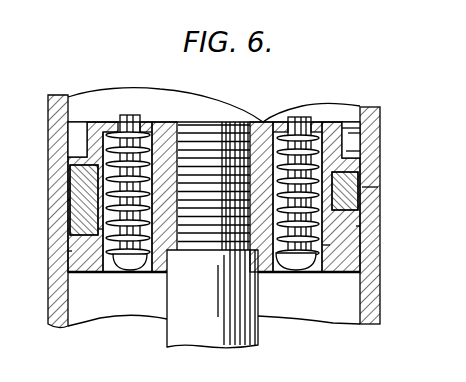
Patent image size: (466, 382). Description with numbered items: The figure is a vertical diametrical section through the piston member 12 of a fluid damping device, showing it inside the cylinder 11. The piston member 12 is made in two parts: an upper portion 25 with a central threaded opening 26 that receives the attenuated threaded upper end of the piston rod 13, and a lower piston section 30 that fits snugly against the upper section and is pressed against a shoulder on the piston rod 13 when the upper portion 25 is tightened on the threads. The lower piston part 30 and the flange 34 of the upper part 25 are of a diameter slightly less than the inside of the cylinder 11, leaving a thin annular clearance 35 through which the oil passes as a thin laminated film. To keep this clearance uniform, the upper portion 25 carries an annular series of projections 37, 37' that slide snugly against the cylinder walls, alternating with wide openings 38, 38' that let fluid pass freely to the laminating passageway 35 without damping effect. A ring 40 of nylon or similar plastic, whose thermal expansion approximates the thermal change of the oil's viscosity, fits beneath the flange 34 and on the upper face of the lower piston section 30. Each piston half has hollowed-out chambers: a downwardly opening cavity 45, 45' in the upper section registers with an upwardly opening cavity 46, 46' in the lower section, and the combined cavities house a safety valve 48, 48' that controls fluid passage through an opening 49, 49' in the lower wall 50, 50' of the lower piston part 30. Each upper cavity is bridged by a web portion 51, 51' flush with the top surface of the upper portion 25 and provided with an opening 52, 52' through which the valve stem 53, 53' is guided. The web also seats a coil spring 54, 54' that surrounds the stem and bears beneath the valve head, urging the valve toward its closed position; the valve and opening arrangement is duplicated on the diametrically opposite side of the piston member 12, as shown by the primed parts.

The cylinder 11 is at (52, 326).
The piston member 12 is at (265, 121).
The piston rod 13 is at (209, 334).
The upper piston portion 25 is at (299, 96).
The central threaded opening 26 is at (170, 122).
The lower piston section 30 is at (53, 276).
The flange 34 is at (57, 198).
The annular clearance space 35 is at (356, 226).
The projection 37 is at (95, 163).
The projection 37' is at (372, 100).
The opening 38 is at (49, 139).
The opening 38' is at (381, 140).
The ring 40 is at (374, 187).
The cavity 45 is at (35, 214).
The cavity 45' is at (383, 112).
The cavity 46 is at (51, 237).
The cavity 46' is at (371, 251).
The safety valve 48 is at (133, 283).
The safety valve 48' is at (294, 302).
The opening 49 is at (120, 243).
The opening 49' is at (299, 220).
The lower wall 50 is at (115, 222).
The lower wall 50' is at (314, 243).
The web portion 51 is at (159, 183).
The web portion 51' is at (352, 158).
The opening 52 is at (122, 114).
The opening 52' is at (297, 127).
The valve stem 53 is at (137, 156).
The valve stem 53' is at (310, 167).
The coil spring 54 is at (41, 261).
The coil spring 54' is at (385, 150).